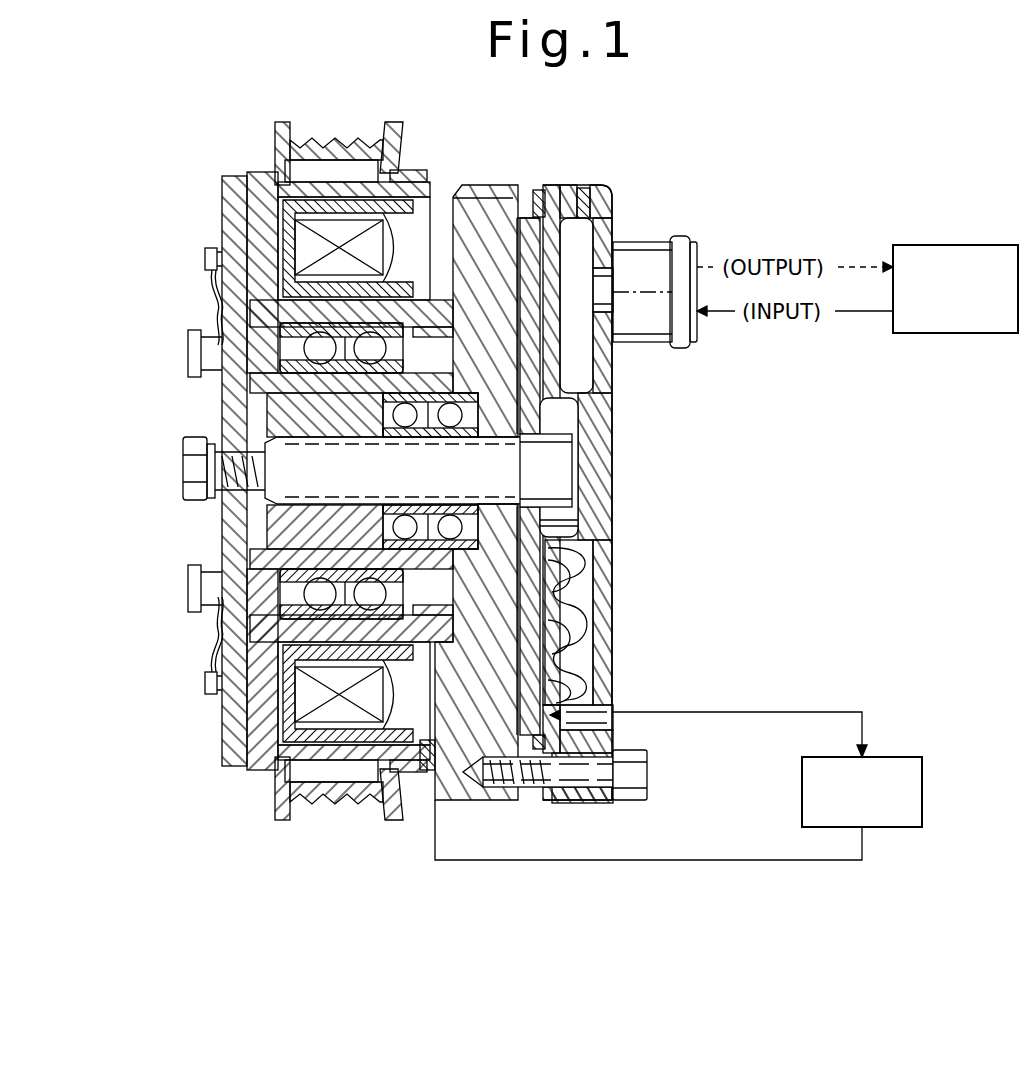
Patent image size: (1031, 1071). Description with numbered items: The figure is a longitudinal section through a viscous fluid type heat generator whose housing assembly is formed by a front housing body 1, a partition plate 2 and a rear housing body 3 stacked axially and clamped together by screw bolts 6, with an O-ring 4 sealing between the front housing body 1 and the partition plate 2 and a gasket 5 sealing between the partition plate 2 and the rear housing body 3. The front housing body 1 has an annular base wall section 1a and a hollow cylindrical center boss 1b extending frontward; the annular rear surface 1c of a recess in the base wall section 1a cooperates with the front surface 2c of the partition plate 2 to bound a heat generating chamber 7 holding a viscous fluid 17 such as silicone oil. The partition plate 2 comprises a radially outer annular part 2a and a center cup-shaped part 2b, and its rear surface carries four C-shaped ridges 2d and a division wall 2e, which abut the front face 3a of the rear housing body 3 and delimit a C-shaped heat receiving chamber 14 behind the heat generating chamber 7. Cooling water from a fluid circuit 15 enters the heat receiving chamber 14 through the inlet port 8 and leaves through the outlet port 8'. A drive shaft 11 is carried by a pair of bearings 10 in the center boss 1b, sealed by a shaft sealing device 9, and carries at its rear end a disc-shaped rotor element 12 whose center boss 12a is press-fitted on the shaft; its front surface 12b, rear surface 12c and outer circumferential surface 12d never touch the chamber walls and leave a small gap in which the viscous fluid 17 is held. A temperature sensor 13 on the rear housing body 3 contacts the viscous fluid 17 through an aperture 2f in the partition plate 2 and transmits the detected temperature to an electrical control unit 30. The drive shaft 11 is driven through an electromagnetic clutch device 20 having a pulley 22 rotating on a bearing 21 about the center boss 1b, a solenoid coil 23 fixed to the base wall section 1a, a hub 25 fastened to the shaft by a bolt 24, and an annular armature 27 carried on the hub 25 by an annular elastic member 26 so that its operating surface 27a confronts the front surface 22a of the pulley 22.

The front housing body 1 is at (500, 212).
The annular base wall section 1a is at (477, 275).
The center boss 1b is at (280, 422).
The annular rear surface 1c is at (525, 650).
The partition plate 2 is at (565, 207).
The radially outer annular part 2a is at (620, 218).
The center cup-shaped part 2b is at (593, 440).
The front surface 2c is at (593, 647).
The C-shaped ridges 2d is at (593, 657).
The division wall 2e is at (583, 337).
The aperture 2f is at (583, 732).
The rear housing body 3 is at (603, 205).
The front face 3a is at (590, 375).
The O-ring 4 is at (552, 200).
The gasket 5 is at (583, 195).
The screw bolts 6 is at (633, 775).
The heat generating chamber 7 is at (556, 718).
The inlet port 8 is at (642, 266).
The outlet port 8' is at (693, 256).
The shaft sealing device 9 is at (530, 468).
The bearings 10 is at (402, 530).
The drive shaft 11 is at (540, 470).
The rotor element 12 is at (527, 237).
The center boss 12a is at (578, 533).
The front circular surface 12b is at (545, 640).
The rear circular surface 12c is at (570, 580).
The outer circumferential surface 12d is at (538, 192).
The temperature sensor 13 is at (603, 715).
The heat receiving chamber 14 is at (583, 362).
The fluid circuit 15 is at (973, 336).
The viscous fluid 17 is at (578, 527).
The electromagnetic clutch device 20 is at (239, 162).
The bearing 21 is at (228, 598).
The pulley 22 is at (255, 240).
The front surface 22a is at (225, 722).
The solenoid coil 23 is at (383, 248).
The bolt 24 is at (195, 468).
The hub 25 is at (260, 405).
The annular elastic member 26 is at (222, 305).
The annular armature 27 is at (220, 300).
The operating surface 27a is at (225, 693).
The electrical control unit 30 is at (895, 757).